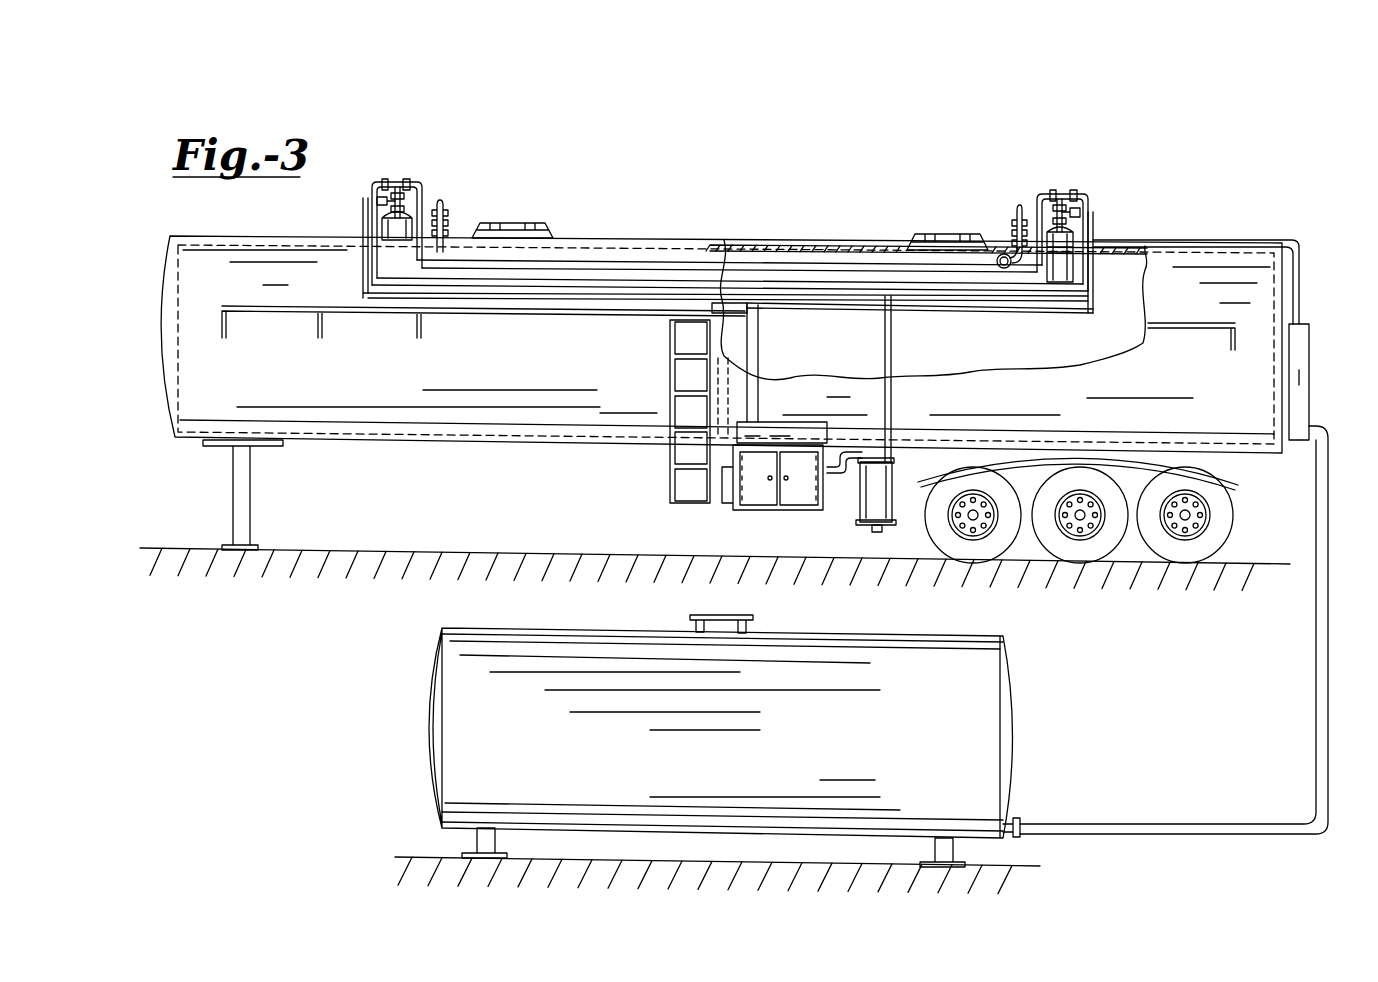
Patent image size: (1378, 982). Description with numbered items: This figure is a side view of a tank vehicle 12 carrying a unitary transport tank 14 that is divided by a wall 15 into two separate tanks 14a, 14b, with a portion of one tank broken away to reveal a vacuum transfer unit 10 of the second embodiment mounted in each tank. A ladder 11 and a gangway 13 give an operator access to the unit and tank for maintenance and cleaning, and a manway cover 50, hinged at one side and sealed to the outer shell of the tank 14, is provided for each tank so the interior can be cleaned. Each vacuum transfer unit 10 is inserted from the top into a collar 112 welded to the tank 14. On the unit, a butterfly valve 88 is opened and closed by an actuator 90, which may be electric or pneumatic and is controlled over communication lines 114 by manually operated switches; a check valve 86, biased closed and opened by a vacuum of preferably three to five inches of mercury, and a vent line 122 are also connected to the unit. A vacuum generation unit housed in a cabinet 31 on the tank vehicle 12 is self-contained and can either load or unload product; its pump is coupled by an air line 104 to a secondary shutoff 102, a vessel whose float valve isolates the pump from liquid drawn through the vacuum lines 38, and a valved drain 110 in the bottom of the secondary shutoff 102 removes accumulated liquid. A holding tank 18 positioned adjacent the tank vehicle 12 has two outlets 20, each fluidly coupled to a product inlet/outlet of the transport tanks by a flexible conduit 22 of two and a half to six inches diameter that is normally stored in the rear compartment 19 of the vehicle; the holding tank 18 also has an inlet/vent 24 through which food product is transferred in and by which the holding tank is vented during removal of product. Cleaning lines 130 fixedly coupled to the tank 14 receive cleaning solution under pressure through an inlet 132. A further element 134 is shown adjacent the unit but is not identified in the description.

The vacuum transfer unit 10 is at (383, 170).
The ladder 11 is at (668, 387).
The tank vehicle 12 is at (788, 245).
The gangway 13 is at (272, 320).
The transport tank 14 is at (225, 233).
The transport tank 14a is at (281, 238).
The transport tank 14b is at (997, 350).
The wall 15 is at (730, 344).
The holding tank 18 is at (430, 728).
The rear compartment 19 is at (1310, 324).
The outlet 20 is at (1013, 822).
The flexible conduit 22 is at (1316, 500).
The inlet/vent 24 is at (735, 613).
The cabinet 31 is at (748, 512).
The vacuum lines 38 is at (366, 222).
The manway cover 50 is at (530, 226).
The check valve 86 is at (385, 180).
The butterfly valve 88 is at (401, 202).
The actuator 90 is at (377, 196).
The secondary shutoff 102 is at (890, 478).
The air line 104 is at (840, 478).
The valved drain 110 is at (877, 533).
The collar 112 is at (385, 242).
The communication lines 114 is at (1045, 308).
The vent line 122 is at (420, 190).
The cleaning lines 130 is at (640, 252).
The inlet 132 is at (1012, 236).
The vent pipe 134 is at (444, 225).